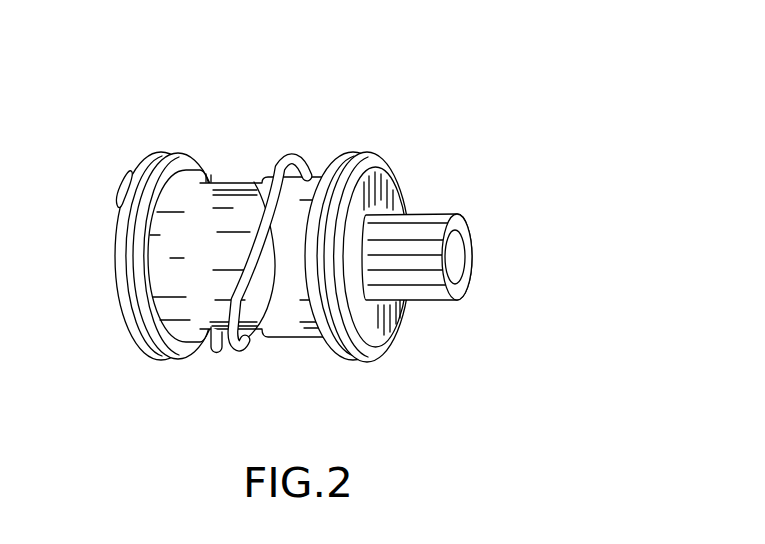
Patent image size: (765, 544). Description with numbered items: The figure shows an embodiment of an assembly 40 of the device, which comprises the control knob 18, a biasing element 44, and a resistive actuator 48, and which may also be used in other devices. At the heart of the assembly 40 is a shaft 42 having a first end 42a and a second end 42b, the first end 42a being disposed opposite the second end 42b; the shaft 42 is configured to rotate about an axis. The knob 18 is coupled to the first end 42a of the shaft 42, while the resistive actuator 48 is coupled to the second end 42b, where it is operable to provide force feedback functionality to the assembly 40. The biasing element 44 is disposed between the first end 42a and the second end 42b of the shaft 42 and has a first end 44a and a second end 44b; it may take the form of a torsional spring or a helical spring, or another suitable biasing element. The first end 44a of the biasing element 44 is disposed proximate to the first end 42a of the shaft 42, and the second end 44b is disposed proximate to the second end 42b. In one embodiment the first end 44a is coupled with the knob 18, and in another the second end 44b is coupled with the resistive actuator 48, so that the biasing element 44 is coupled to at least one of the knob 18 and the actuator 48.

The assembly 40 is at (328, 237).
The shaft 42 is at (308, 338).
The first end of the shaft 42a is at (378, 332).
The second end of the shaft 42b is at (212, 333).
The biasing element 44 is at (294, 158).
The first end of the biasing element 44a is at (375, 155).
The second end of the biasing element 44b is at (147, 162).
The resistive actuator 48 is at (170, 325).
The control knob 18 is at (461, 224).